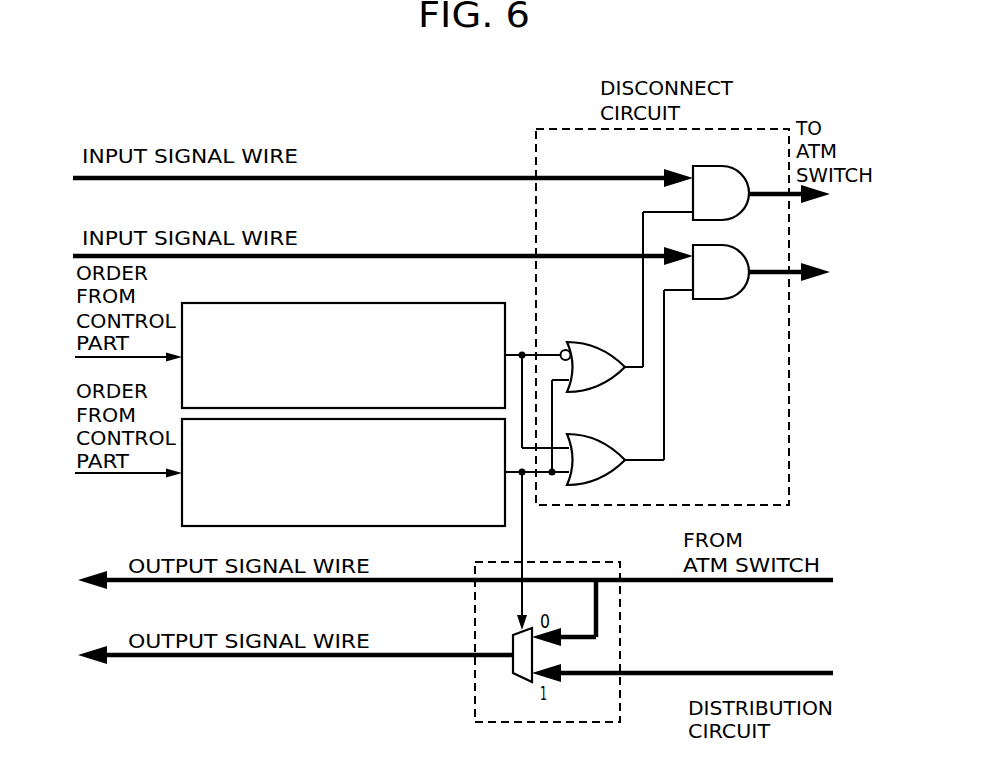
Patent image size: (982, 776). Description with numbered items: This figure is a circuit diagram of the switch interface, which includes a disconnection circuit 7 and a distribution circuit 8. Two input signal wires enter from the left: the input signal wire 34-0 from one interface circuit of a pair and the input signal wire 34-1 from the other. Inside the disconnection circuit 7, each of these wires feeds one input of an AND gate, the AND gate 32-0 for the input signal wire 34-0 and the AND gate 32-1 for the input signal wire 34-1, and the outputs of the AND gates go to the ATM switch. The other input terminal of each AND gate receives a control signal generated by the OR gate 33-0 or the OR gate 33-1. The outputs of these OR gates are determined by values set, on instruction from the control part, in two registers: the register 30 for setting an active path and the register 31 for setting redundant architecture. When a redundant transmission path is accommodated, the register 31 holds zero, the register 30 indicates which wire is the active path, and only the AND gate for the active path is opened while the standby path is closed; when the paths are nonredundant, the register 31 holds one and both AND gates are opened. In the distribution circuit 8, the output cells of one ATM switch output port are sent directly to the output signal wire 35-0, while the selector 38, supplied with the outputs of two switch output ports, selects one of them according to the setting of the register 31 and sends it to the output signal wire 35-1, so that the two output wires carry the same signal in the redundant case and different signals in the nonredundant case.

The disconnection circuit 7 is at (557, 128).
The distribution circuit 8 is at (622, 698).
The register for setting an active path 30 is at (418, 300).
The register for setting redundant architecture 31 is at (417, 527).
The AND gate 32-0 is at (705, 164).
The AND gate 32-1 is at (703, 300).
The OR gate 33-0 is at (582, 342).
The OR gate 33-1 is at (620, 472).
The input signal wire 34-0 is at (400, 177).
The input signal wire 34-1 is at (400, 257).
The output signal wire 35-0 is at (350, 582).
The output signal wire 35-1 is at (350, 659).
The selector 38 is at (510, 663).